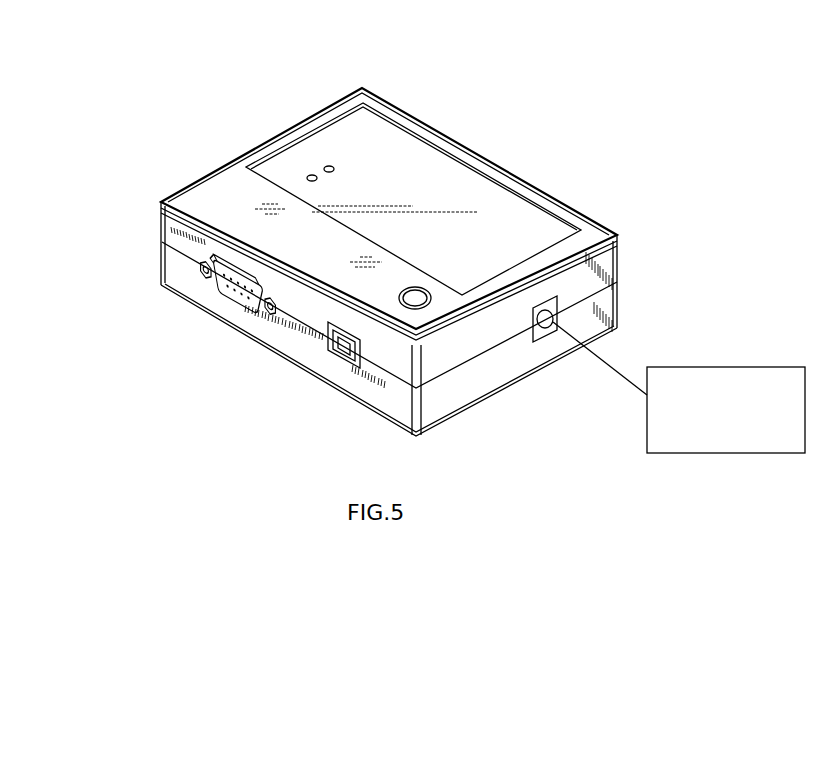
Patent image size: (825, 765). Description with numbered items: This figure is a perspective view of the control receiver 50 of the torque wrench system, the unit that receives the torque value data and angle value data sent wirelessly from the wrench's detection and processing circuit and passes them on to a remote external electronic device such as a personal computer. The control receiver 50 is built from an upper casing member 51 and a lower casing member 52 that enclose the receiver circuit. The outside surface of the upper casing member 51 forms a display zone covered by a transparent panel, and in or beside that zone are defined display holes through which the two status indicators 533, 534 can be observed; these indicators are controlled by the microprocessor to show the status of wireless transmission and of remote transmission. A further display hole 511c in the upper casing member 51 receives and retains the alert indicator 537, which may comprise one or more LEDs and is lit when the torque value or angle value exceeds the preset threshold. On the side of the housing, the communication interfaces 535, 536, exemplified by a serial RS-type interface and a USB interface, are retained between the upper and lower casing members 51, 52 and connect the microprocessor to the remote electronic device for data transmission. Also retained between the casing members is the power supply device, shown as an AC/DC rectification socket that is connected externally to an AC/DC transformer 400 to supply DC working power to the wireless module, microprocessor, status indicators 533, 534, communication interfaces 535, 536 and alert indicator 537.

The control receiver 50 is at (393, 237).
The upper casing member 51 is at (349, 225).
The lower casing member 52 is at (173, 277).
The display hole 511c is at (463, 187).
The status indicator 533 is at (312, 174).
The status indicator 534 is at (328, 166).
The communication interface 535 is at (233, 293).
The communication interface 536 is at (338, 357).
The alert indicator 537 is at (548, 317).
The AC/DC transformer 400 is at (713, 366).